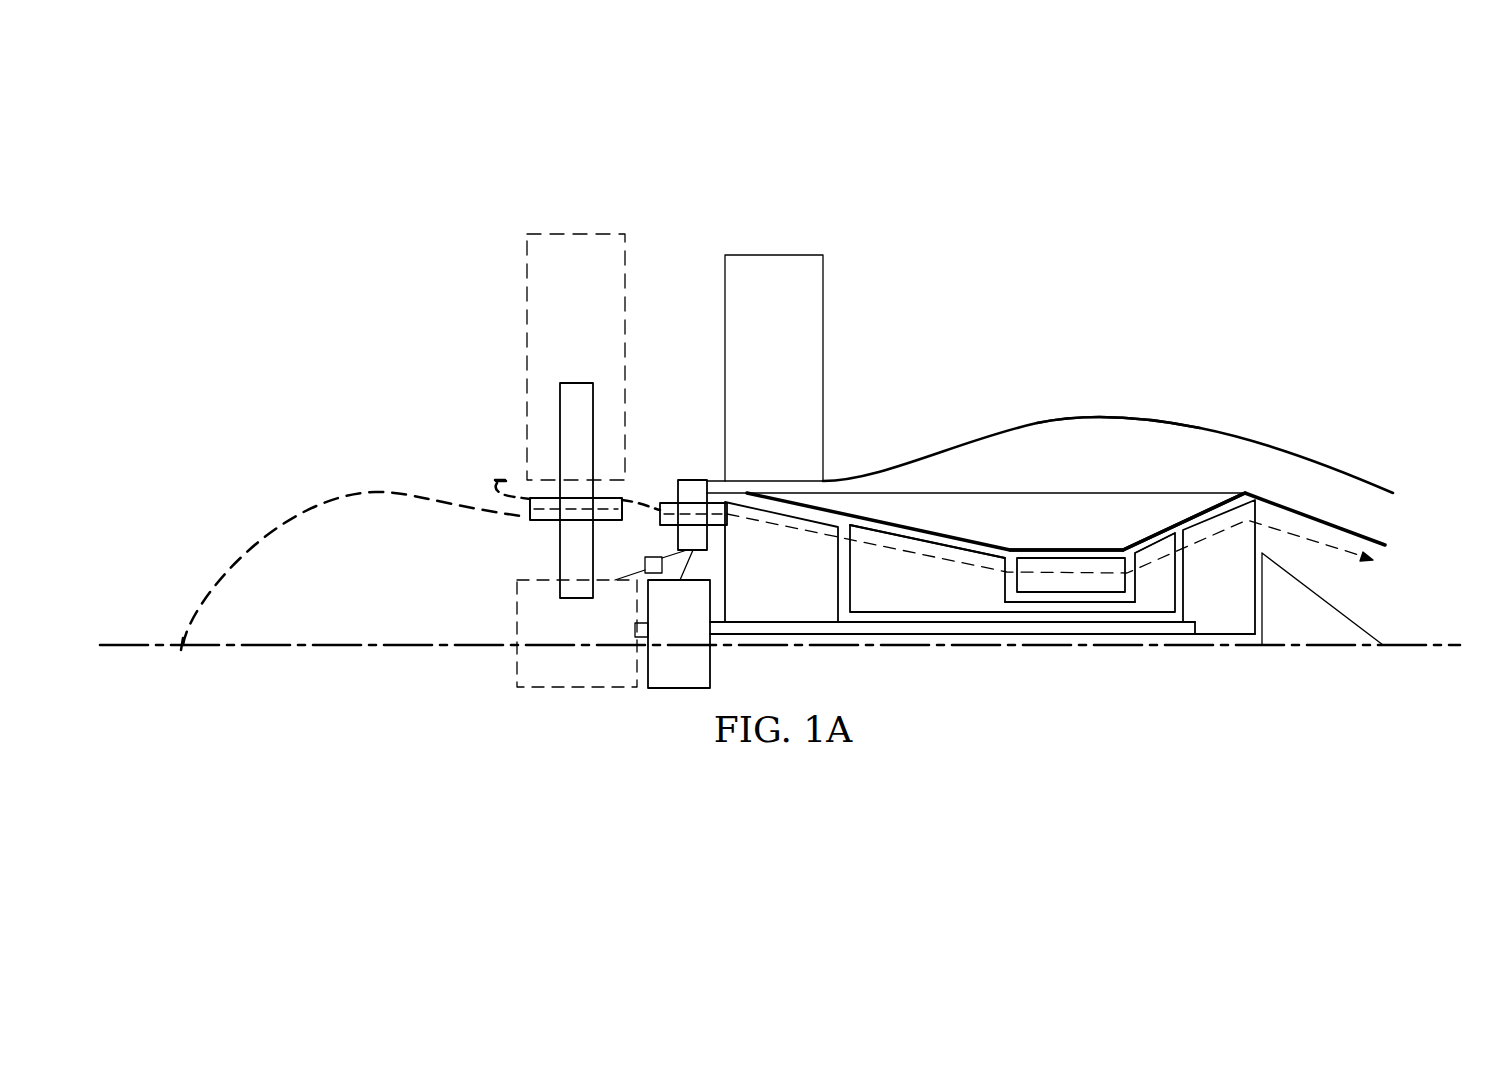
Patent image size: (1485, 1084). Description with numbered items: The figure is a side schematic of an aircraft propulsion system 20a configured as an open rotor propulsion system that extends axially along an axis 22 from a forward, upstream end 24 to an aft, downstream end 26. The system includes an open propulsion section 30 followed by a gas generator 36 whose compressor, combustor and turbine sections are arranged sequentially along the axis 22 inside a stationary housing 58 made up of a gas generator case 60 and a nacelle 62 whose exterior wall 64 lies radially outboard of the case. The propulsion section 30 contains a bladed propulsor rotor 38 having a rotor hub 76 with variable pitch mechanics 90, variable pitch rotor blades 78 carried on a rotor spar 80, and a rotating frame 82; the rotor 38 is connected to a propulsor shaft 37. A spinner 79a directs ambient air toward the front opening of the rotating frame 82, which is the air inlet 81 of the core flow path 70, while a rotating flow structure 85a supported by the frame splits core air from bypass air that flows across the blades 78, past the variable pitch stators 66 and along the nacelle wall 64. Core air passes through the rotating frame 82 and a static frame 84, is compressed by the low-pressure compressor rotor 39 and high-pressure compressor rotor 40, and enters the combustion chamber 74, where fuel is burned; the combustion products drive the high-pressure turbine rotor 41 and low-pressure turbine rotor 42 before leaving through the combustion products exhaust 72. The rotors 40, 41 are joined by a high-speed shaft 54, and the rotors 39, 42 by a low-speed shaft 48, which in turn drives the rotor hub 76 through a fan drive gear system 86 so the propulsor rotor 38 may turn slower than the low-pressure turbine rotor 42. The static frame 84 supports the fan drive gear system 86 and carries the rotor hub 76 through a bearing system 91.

The aircraft propulsion system 20a is at (338, 174).
The axis 22 is at (303, 652).
The forward, upstream end 24 is at (181, 655).
The aft, downstream end 26 is at (1385, 638).
The open propulsion section 30 is at (698, 224).
The gas generator 36 is at (1068, 505).
The propulsor shaft 37 is at (636, 628).
The bladed propulsor rotor 38 is at (512, 339).
The low-pressure compressor rotor 39 is at (781, 562).
The high-pressure compressor rotor 40 is at (1012, 568).
The high-pressure turbine rotor 41 is at (1158, 553).
The low-pressure turbine rotor 42 is at (1219, 567).
The low-speed shaft 48 is at (918, 637).
The high-speed shaft 54 is at (1070, 606).
The stationary housing 58 is at (1158, 479).
The gas generator case 60 is at (957, 535).
The nacelle 62 is at (1148, 420).
The exterior wall 64 is at (1031, 416).
The variable pitch stators 66 is at (854, 251).
The core flow path 70 is at (897, 552).
The combustion products exhaust 72 is at (1398, 567).
The combustion chamber 74 is at (1098, 565).
The rotor hub 76 is at (517, 605).
The variable pitch rotor blades 78 is at (563, 232).
The spinner 79a is at (330, 492).
The rotor spar 80 is at (577, 383).
The air inlet 81 is at (452, 478).
The rotating frame 82 is at (525, 517).
The static frame 84 is at (690, 480).
The rotating flow structure 85a is at (497, 478).
The fan drive gear system 86 is at (680, 690).
The variable pitch mechanics 90 is at (505, 660).
The bearing system 91 is at (645, 563).